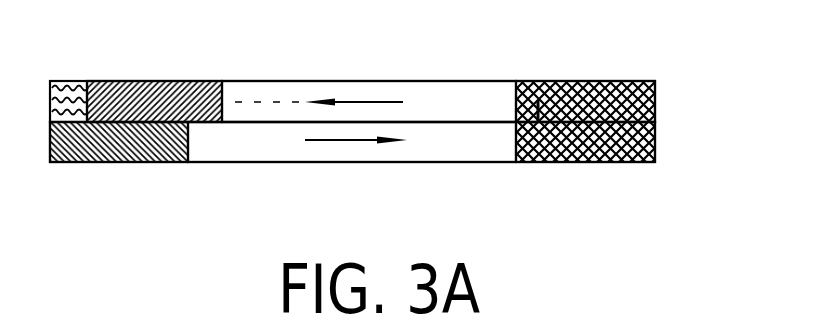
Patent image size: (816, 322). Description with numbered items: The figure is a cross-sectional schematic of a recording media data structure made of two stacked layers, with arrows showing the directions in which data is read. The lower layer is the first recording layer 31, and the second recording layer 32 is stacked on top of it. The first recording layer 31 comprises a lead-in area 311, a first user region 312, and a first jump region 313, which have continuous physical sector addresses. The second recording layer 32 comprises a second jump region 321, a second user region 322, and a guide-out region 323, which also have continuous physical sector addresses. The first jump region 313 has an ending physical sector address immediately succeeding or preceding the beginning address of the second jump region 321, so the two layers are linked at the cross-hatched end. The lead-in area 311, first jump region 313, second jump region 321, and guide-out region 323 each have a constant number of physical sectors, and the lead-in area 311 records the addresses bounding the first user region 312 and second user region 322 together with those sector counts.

The first recording layer 31 is at (657, 148).
The lead-in area 311 is at (112, 162).
The first user region 312 is at (263, 147).
The first jump region 313 is at (553, 165).
The second recording layer 32 is at (657, 95).
The second jump region 321 is at (556, 81).
The second user region 322 is at (398, 81).
The guide-out region 323 is at (162, 81).